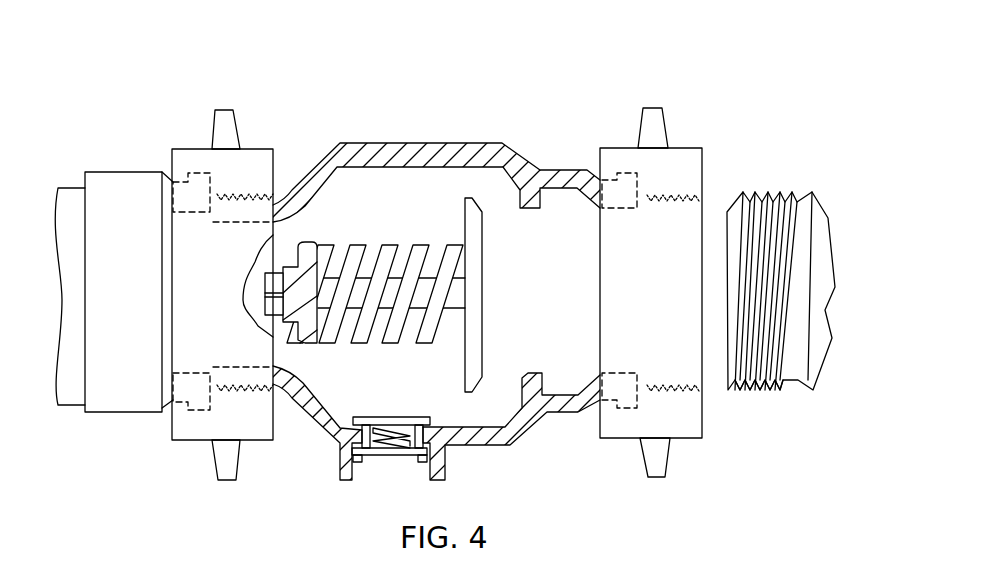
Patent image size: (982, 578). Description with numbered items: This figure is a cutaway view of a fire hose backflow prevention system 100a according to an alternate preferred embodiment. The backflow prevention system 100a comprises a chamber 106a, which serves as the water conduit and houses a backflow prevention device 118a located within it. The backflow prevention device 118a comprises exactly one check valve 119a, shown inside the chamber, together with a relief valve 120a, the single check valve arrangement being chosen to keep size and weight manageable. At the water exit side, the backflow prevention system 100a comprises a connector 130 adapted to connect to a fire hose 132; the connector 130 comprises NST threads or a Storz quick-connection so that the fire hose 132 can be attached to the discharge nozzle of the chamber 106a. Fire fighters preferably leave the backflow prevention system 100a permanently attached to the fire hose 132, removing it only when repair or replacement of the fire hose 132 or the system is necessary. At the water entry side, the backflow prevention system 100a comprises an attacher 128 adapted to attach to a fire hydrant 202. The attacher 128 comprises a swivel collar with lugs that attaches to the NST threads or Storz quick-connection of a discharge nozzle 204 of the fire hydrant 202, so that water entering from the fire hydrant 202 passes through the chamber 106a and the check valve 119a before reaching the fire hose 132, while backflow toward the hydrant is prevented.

The backflow prevention system 100a is at (594, 69).
The chamber 106a is at (367, 143).
The backflow prevention device 118a is at (422, 245).
The check valve 119a is at (503, 308).
The relief valve 120a is at (409, 416).
The attacher 128 is at (685, 438).
The connector 130 is at (250, 195).
The fire hose 132 is at (77, 397).
The fire hydrant 202 is at (817, 212).
The discharge nozzle 204 is at (762, 387).